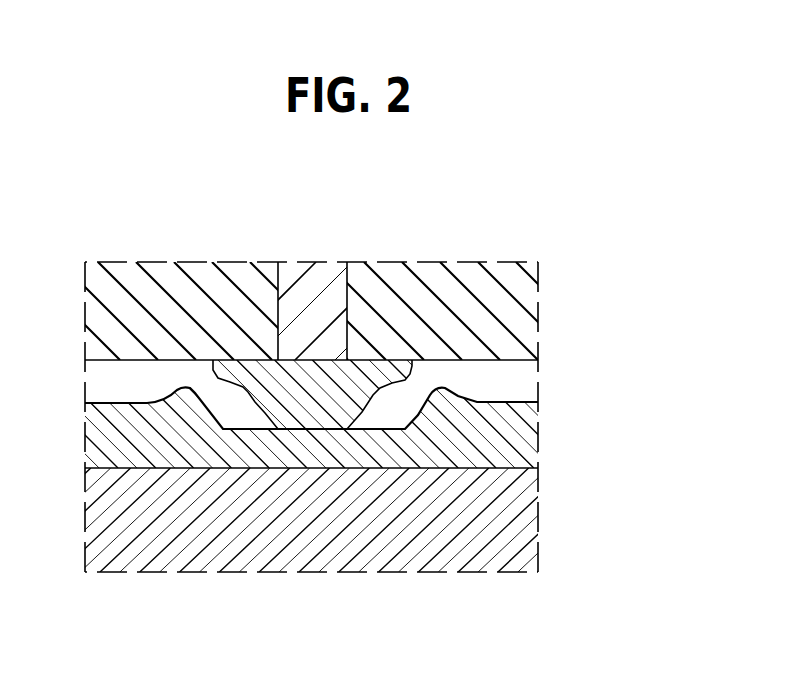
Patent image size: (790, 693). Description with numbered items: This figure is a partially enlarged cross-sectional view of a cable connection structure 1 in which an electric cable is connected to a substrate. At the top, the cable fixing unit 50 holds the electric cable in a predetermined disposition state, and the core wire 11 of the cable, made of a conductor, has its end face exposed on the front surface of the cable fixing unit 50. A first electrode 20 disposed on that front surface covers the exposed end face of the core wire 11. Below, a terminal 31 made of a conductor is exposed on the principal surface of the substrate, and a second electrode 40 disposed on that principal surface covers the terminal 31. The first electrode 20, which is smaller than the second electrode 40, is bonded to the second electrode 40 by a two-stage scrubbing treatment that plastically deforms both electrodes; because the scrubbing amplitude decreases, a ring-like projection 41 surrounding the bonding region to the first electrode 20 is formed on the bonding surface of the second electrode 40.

The cable connection structure 1 is at (627, 266).
The core wire 11 is at (315, 262).
The first electrode 20 is at (249, 360).
The terminal 31 is at (541, 523).
The second electrode 40 is at (539, 436).
The ring-like projection 41 is at (443, 389).
The cable fixing unit 50 is at (423, 262).